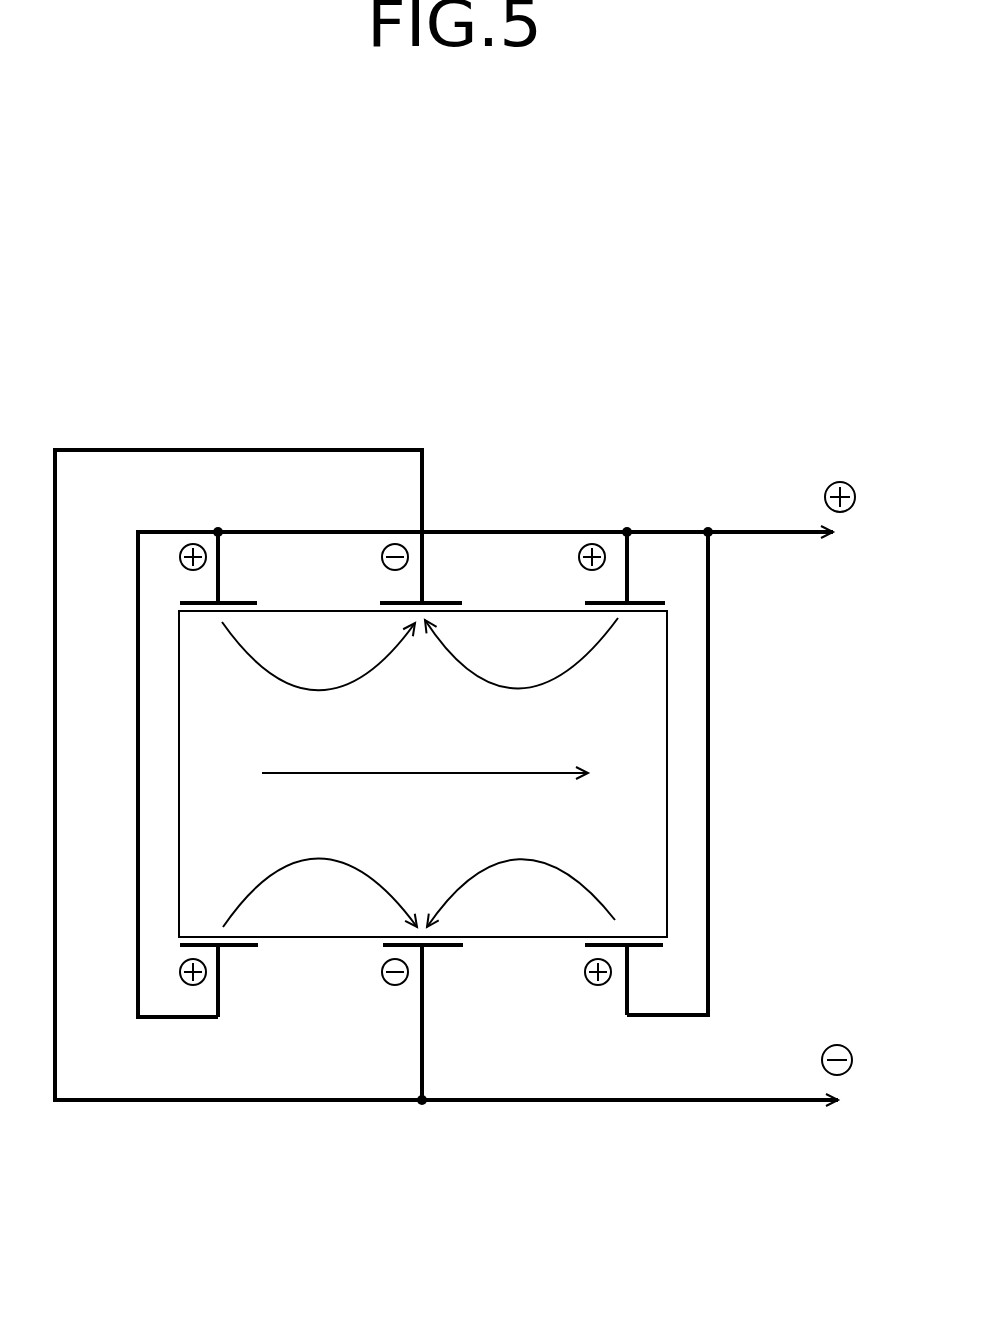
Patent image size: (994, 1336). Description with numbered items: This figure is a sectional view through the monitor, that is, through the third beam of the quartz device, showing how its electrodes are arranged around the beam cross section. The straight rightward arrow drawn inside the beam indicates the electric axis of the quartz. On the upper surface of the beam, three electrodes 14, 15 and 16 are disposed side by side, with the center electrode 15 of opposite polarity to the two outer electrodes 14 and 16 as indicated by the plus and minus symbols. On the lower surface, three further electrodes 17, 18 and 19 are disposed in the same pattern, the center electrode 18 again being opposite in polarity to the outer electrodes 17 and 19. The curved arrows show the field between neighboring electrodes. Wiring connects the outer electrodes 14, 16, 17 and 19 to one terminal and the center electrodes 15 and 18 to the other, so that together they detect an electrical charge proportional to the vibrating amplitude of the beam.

The electrode 14 is at (235, 594).
The electrode 15 is at (438, 595).
The electrode 16 is at (640, 593).
The electrode 17 is at (235, 952).
The electrode 18 is at (438, 953).
The electrode 19 is at (640, 953).